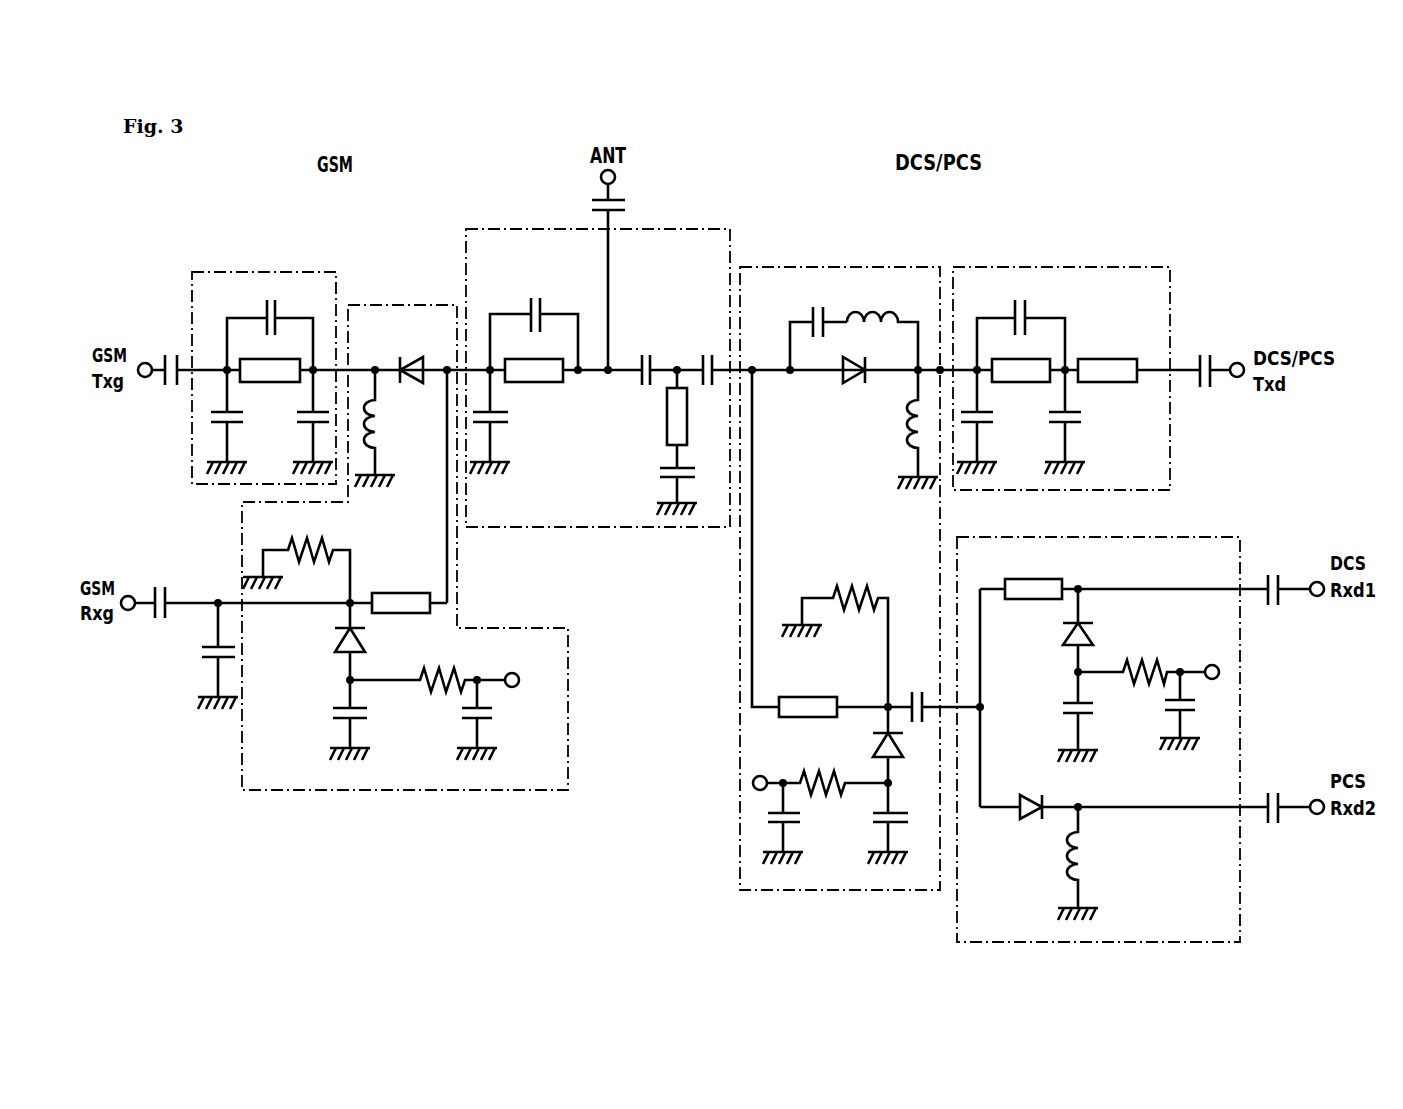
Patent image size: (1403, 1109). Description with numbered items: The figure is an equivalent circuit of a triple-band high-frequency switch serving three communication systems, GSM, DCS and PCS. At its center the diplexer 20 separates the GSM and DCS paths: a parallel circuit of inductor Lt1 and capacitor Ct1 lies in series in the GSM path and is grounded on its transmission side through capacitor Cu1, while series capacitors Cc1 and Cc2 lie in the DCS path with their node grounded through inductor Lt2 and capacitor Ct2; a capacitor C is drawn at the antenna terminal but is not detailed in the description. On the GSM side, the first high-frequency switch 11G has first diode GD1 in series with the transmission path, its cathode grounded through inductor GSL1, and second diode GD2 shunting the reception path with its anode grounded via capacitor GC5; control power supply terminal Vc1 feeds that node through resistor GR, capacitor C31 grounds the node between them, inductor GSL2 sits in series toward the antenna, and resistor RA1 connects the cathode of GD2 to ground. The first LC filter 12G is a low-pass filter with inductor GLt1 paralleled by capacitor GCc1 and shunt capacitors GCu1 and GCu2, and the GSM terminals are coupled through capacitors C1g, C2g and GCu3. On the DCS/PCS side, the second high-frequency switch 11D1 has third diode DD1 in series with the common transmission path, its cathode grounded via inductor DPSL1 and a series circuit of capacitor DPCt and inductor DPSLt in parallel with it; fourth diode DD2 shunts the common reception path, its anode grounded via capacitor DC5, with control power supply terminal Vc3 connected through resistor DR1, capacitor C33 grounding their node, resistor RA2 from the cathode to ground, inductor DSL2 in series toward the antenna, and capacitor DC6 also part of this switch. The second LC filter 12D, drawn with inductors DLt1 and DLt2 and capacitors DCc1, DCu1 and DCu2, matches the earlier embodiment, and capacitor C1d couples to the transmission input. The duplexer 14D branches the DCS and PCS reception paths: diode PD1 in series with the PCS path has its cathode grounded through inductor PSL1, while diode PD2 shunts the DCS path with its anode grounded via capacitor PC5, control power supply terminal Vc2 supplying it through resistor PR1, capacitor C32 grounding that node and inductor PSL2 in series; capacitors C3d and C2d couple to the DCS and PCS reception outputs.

The first LC filter 12G is at (284, 272).
The first high-frequency switch 11G is at (388, 306).
The diplexer 20 is at (532, 229).
The second high-frequency switch 11D1 is at (808, 267).
The second LC filter 12D is at (1020, 267).
The duplexer 14D is at (1062, 537).
The capacitor C1g is at (167, 358).
The capacitor GCc1 is at (270, 324).
The inductor GLt1 is at (268, 358).
The ground capacitor GCu2 is at (208, 422).
The ground capacitor GCu1 is at (294, 422).
The first diode GD1 is at (412, 381).
The inductor GSL1 is at (398, 428).
The antenna capacitor C is at (617, 205).
The capacitor Ct1 is at (534, 321).
The inductor Lt1 is at (534, 358).
The capacitor Cu1 is at (501, 422).
The capacitor Cc1 is at (647, 358).
The capacitor Cc2 is at (705, 358).
The inductor Lt2 is at (657, 419).
The capacitor Ct2 is at (660, 488).
The capacitor DPCt is at (818, 325).
The inductor DPSLt is at (882, 325).
The third diode DD1 is at (845, 385).
The inductor DPSL1 is at (886, 429).
The capacitor DCc1 is at (1021, 324).
The transmission line DLt1 is at (1021, 358).
The transmission line DLt2 is at (1107, 358).
The capacitor DCu1 is at (996, 422).
The capacitor DCu2 is at (1082, 422).
The capacitor C1d is at (1205, 354).
The capacitor C2g is at (160, 589).
The capacitor GCu3 is at (194, 656).
The resistor RA1 is at (296, 552).
The inductor GSL2 is at (401, 588).
The second diode GD2 is at (370, 641).
The capacitor GC5 is at (368, 720).
The resistor GR is at (427, 693).
The capacitor C31 is at (496, 720).
The control power supply terminal Vc1 is at (533, 681).
The resistor RA2 is at (835, 633).
The inductor DSL2 is at (808, 693).
The capacitor DC6 is at (914, 692).
The fourth diode DD2 is at (869, 745).
The resistor DR1 is at (827, 769).
The control power supply terminal Vc3 is at (740, 783).
The capacitor C33 is at (764, 823).
The capacitor DC5 is at (871, 823).
The inductor PSL2 is at (1145, 573).
The diode PD2 is at (1059, 630).
The resistor PR1 is at (1141, 654).
The control power supply terminal Vc2 is at (1212, 655).
The capacitor PC5 is at (1061, 717).
The capacitor C32 is at (1161, 711).
The diode PD1 is at (1145, 793).
The inductor PSL1 is at (1056, 863).
The capacitor C3d is at (1291, 576).
The capacitor C2d is at (1291, 795).